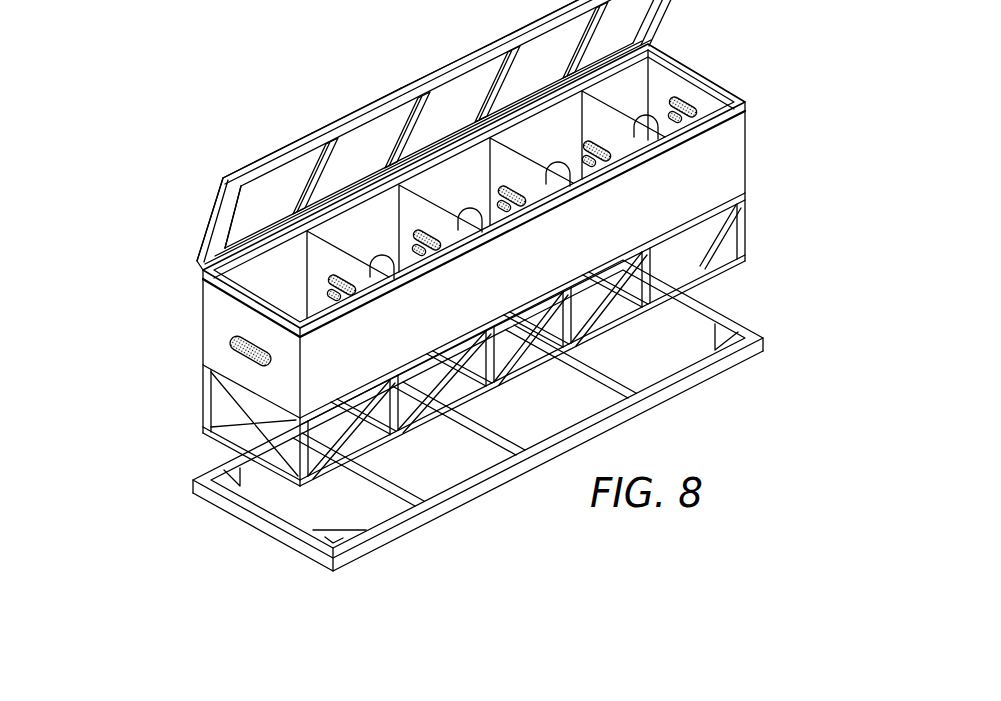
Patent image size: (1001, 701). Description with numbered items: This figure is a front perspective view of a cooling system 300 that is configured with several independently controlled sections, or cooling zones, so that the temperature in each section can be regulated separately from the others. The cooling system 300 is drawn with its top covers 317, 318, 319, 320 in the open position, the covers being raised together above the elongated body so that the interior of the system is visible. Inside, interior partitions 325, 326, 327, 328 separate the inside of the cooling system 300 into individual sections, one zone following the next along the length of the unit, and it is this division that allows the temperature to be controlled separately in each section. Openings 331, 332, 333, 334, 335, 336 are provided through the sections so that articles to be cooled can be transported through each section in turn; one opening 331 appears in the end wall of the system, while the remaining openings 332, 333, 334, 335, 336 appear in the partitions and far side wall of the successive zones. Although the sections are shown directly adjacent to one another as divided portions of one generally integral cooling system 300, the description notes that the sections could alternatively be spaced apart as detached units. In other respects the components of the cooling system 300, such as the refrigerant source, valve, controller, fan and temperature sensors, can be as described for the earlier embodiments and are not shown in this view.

The cooling system 300 is at (133, 387).
The top cover 317 is at (272, 160).
The top cover 318 is at (372, 109).
The top cover 319 is at (474, 58).
The top cover 320 is at (560, 14).
The interior partition 325 is at (397, 279).
The interior partition 326 is at (477, 232).
The interior partition 327 is at (573, 191).
The interior partition 328 is at (650, 135).
The opening 331 is at (229, 353).
The opening 332 is at (329, 302).
The opening 333 is at (427, 250).
The opening 334 is at (513, 227).
The opening 335 is at (611, 158).
The opening 336 is at (680, 134).